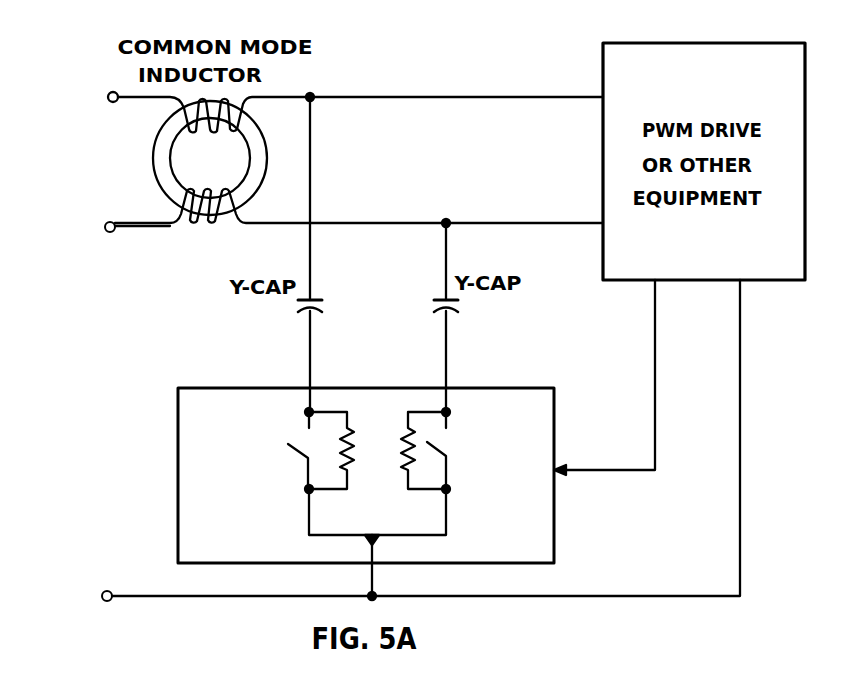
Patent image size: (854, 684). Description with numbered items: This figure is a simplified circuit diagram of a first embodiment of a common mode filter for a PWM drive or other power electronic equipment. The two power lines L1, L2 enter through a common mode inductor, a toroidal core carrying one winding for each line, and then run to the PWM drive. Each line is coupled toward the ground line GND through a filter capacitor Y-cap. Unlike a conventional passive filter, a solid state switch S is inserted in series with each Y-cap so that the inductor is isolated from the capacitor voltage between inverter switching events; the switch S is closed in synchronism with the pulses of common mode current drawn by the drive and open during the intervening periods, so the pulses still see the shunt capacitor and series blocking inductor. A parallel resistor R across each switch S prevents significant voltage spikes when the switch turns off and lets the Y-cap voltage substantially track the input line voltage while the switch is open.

The line L1 is at (96, 98).
The line L2 is at (120, 236).
The parallel resistor R is at (377, 449).
The switch S is at (369, 460).
The ground line GND is at (74, 597).